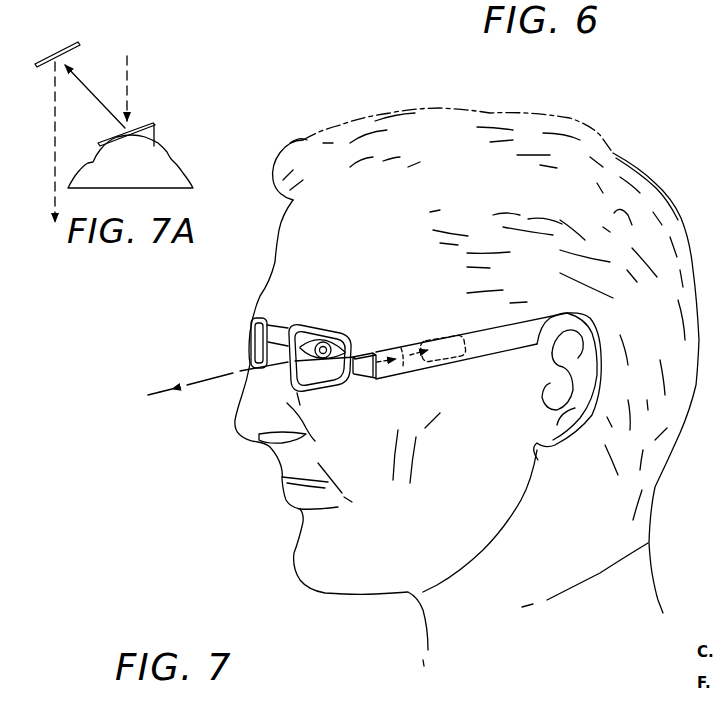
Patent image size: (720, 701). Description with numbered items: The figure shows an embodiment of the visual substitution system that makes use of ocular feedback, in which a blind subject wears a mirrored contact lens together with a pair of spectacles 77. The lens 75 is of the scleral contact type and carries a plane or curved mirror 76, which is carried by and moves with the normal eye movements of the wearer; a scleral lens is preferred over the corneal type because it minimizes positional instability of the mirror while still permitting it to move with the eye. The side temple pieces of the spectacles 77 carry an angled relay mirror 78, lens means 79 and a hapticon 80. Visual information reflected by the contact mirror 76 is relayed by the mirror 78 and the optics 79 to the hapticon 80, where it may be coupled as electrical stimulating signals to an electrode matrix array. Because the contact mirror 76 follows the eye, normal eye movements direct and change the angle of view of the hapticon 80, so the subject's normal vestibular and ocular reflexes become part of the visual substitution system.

In FIG. 7A, the lens 75 is at (172, 151).
In FIG. 7A, the mirror 76 is at (118, 134).
In FIG. 7, the mirror 76 is at (329, 345).
In FIG. 7, the spectacles 77 is at (337, 288).
In FIG. 7A, the relay mirror 78 is at (60, 58).
In FIG. 7, the relay mirror 78 is at (359, 356).
In FIG. 7, the lens means 79 is at (404, 370).
In FIG. 7, the hapticon 80 is at (439, 340).